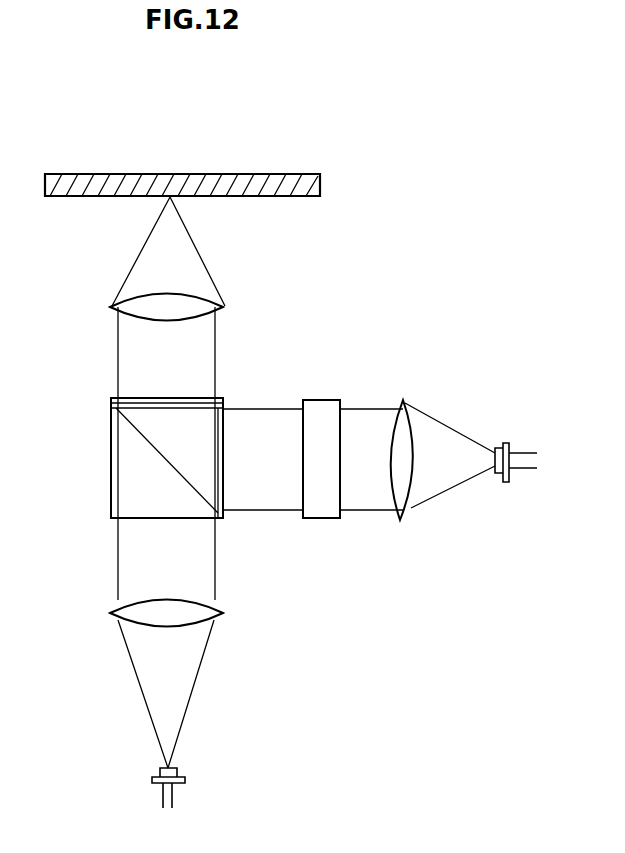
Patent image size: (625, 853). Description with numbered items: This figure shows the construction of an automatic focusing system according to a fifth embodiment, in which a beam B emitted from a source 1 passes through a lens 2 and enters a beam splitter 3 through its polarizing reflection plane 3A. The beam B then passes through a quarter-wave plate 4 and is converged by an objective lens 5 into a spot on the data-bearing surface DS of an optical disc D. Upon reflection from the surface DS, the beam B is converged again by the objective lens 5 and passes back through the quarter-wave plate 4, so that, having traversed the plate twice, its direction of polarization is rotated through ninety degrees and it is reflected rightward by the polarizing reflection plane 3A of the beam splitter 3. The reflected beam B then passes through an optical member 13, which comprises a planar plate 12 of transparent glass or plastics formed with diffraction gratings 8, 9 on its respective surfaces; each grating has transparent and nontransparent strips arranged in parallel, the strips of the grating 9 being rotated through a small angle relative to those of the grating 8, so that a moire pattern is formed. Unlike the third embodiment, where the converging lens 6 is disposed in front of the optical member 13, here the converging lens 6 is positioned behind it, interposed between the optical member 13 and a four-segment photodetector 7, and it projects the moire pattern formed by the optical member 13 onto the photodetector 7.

The light source (laser diode) 1 is at (177, 770).
The collimator lens 2 is at (223, 615).
The beam splitter 3 is at (110, 490).
The polarizing reflection plane 3A is at (138, 433).
The quarter-wave plate 4 is at (110, 399).
The objective lens 5 is at (220, 308).
The converging lens 6 is at (409, 399).
The four-segment photodetector 7 is at (493, 476).
The diffraction grating 8 is at (303, 513).
The diffraction grating 9 is at (340, 513).
The planar plate 12 is at (322, 513).
The optical member 13 is at (324, 399).
The beam B is at (135, 672).
The optical disc D is at (255, 174).
The data-bearing surface DS is at (265, 197).